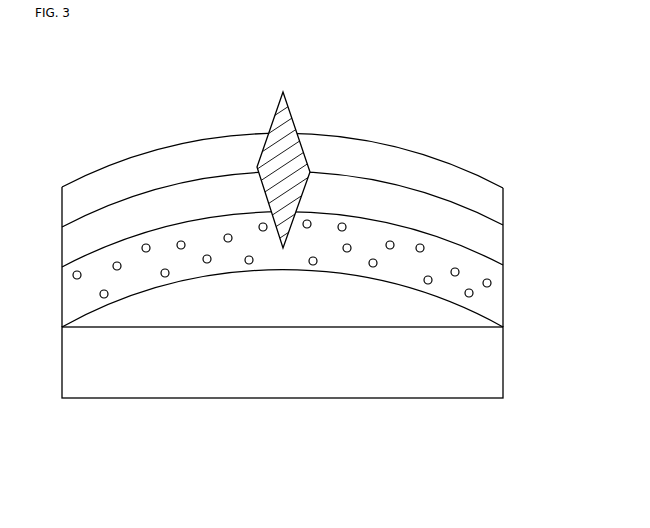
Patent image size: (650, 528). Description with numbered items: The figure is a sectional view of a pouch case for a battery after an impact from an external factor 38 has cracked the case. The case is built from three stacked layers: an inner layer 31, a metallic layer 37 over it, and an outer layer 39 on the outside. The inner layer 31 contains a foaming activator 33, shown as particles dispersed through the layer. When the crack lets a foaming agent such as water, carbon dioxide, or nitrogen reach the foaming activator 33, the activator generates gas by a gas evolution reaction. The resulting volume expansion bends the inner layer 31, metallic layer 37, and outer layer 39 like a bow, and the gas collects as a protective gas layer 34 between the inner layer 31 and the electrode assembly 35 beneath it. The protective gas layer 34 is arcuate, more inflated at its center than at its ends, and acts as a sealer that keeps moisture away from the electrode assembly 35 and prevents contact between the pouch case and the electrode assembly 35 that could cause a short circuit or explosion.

The inner layer 31 is at (495, 302).
The foaming activator 33 is at (491, 283).
The protective gas layer 34 is at (273, 312).
The electrode assembly 35 is at (497, 363).
The metallic layer 37 is at (495, 243).
The external factor 38 is at (292, 125).
The outer layer 39 is at (495, 201).